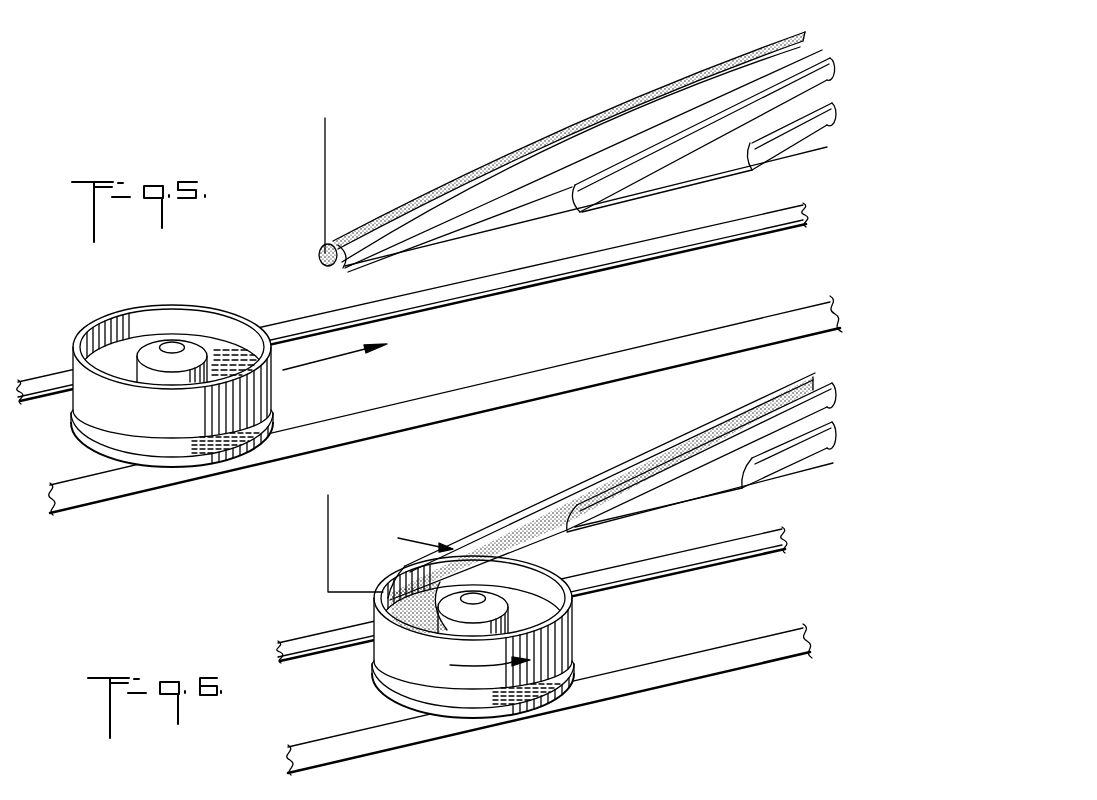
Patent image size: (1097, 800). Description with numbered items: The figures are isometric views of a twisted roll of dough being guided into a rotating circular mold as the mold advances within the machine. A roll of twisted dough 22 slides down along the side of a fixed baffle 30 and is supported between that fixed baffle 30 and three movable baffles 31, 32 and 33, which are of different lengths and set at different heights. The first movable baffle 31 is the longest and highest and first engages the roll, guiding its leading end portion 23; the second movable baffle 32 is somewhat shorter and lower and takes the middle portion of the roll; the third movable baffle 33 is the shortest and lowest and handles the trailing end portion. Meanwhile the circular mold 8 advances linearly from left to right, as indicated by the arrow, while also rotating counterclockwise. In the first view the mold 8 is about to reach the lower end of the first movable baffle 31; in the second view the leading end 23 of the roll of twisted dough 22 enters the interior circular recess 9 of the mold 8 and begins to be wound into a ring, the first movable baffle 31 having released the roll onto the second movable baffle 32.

In FIG. 5, the circular mold 8 is at (102, 320).
In FIG. 6, the circular mold 8 is at (402, 667).
In FIG. 5, the interior circular recess 9 is at (232, 358).
In FIG. 6, the interior circular recess 9 is at (543, 613).
In FIG. 5, the roll of twisted dough 22 is at (508, 147).
In FIG. 6, the roll of twisted dough 22 is at (380, 603).
In FIG. 5, the leading end portion 23 is at (319, 258).
In FIG. 5, the fixed baffle 30 is at (325, 155).
In FIG. 6, the fixed baffle 30 is at (326, 520).
In FIG. 5, the first movable baffle 31 is at (343, 268).
In FIG. 6, the first movable baffle 31 is at (475, 537).
In FIG. 5, the second movable baffle 32 is at (583, 207).
In FIG. 6, the second movable baffle 32 is at (568, 530).
In FIG. 5, the third movable baffle 33 is at (750, 168).
In FIG. 6, the third movable baffle 33 is at (745, 486).